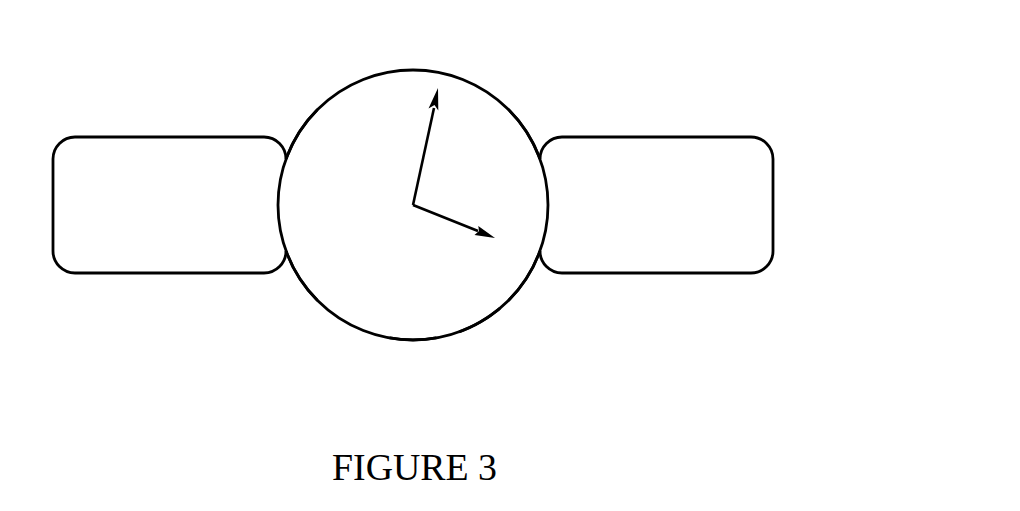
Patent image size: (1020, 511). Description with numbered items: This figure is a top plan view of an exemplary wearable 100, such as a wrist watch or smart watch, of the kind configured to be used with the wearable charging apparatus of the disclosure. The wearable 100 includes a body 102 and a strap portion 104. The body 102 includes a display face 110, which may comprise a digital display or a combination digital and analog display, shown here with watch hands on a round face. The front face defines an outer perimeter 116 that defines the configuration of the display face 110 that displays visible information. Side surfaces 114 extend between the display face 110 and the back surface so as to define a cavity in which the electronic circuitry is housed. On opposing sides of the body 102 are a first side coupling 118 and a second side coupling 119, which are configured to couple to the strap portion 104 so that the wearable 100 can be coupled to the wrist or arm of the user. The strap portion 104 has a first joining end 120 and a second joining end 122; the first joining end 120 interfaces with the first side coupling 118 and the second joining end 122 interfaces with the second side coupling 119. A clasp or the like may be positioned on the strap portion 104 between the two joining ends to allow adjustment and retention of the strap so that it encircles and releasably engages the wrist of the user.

The wearable 100 is at (632, 68).
The body 102 is at (334, 329).
The strap portion 104 is at (688, 292).
The display face 110 is at (485, 131).
The side surface 114 is at (412, 340).
The outer perimeter 116 is at (478, 322).
The first side coupling 118 is at (281, 274).
The second side coupling 119 is at (544, 273).
The first joining end 120 is at (283, 141).
The second joining end 122 is at (553, 137).